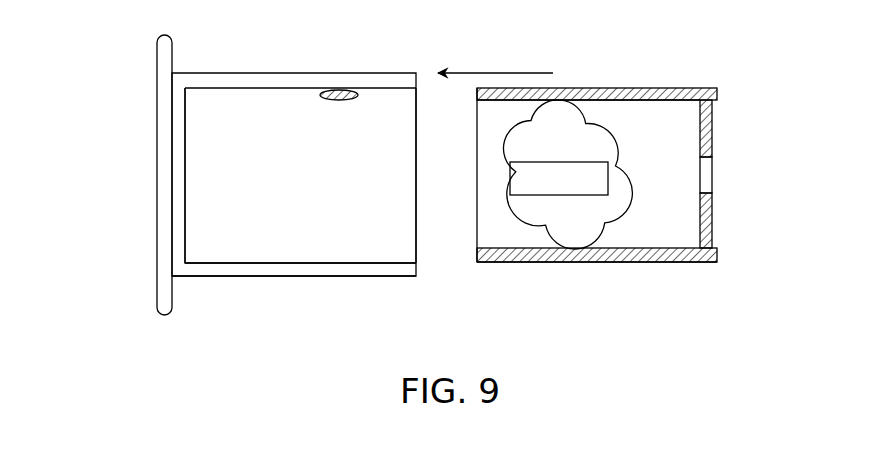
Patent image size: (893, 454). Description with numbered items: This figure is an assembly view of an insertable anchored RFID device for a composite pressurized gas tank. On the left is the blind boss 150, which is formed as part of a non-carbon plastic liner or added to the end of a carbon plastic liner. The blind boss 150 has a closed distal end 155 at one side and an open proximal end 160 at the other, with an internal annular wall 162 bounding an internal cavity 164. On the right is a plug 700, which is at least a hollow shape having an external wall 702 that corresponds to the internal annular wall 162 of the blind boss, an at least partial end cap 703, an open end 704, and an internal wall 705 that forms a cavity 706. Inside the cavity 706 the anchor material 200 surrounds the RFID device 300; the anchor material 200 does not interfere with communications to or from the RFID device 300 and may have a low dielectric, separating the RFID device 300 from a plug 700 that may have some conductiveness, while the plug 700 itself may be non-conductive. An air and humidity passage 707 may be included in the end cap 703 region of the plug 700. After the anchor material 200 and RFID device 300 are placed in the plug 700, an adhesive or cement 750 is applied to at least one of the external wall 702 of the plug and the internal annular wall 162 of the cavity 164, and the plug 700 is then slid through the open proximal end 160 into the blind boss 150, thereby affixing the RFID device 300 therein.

The blind boss 150 is at (262, 54).
The closed distal end 155 is at (183, 165).
The internal cavity 164 is at (191, 118).
The internal annular wall 162 is at (290, 260).
The adhesive or cement 750 is at (340, 100).
The open proximal end 160 is at (425, 218).
The open end 704 is at (467, 234).
The plug 700 is at (669, 71).
The cavity 706 is at (693, 128).
The partial end cap 703 is at (714, 121).
The air and humidity passage 707 is at (714, 176).
The internal wall 705 is at (655, 247).
The external wall 702 is at (620, 263).
The anchor material 200 is at (549, 145).
The RFID device 300 is at (522, 190).